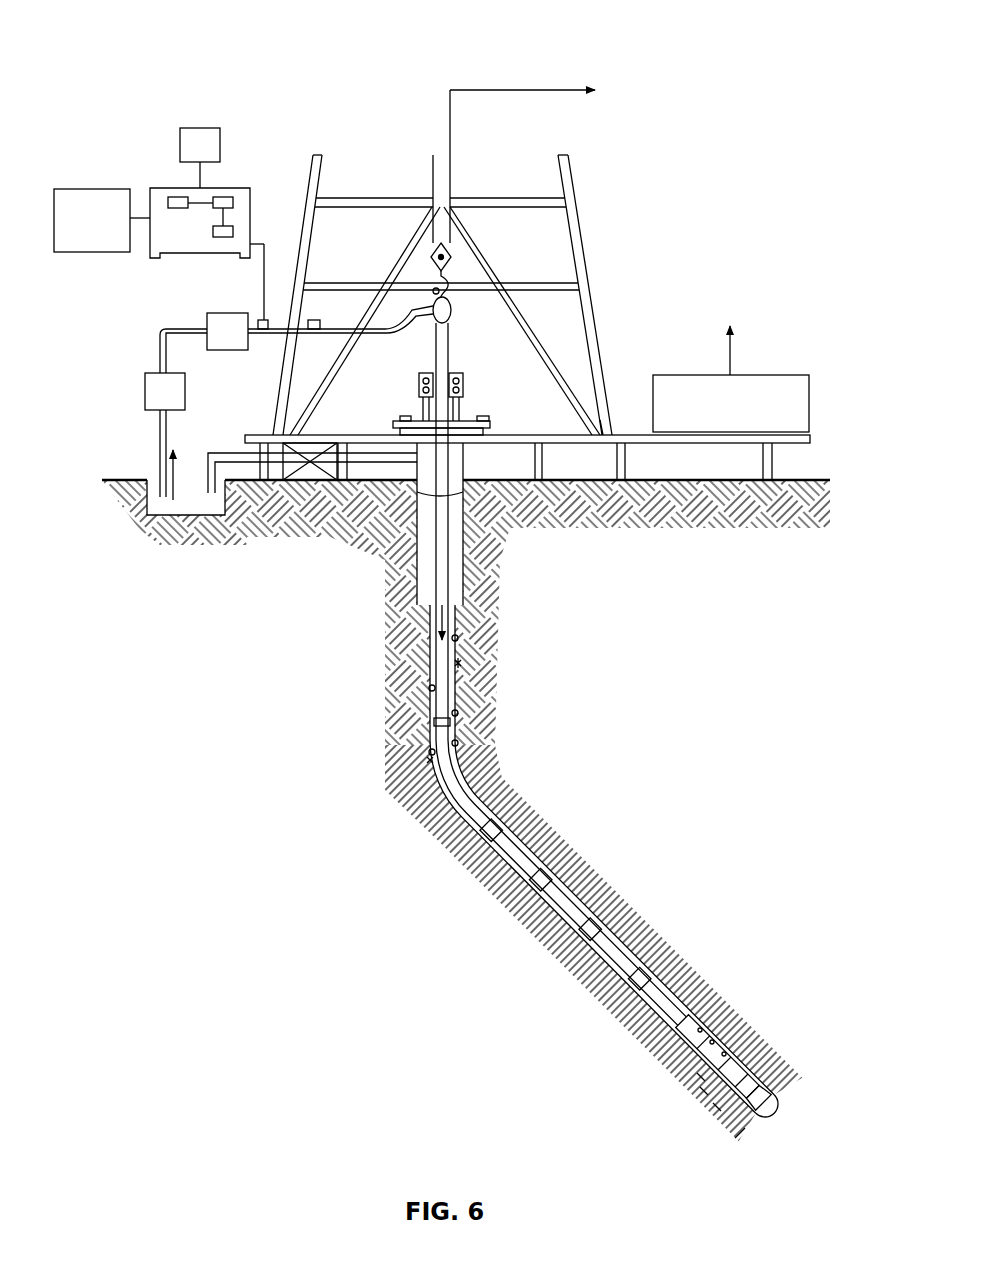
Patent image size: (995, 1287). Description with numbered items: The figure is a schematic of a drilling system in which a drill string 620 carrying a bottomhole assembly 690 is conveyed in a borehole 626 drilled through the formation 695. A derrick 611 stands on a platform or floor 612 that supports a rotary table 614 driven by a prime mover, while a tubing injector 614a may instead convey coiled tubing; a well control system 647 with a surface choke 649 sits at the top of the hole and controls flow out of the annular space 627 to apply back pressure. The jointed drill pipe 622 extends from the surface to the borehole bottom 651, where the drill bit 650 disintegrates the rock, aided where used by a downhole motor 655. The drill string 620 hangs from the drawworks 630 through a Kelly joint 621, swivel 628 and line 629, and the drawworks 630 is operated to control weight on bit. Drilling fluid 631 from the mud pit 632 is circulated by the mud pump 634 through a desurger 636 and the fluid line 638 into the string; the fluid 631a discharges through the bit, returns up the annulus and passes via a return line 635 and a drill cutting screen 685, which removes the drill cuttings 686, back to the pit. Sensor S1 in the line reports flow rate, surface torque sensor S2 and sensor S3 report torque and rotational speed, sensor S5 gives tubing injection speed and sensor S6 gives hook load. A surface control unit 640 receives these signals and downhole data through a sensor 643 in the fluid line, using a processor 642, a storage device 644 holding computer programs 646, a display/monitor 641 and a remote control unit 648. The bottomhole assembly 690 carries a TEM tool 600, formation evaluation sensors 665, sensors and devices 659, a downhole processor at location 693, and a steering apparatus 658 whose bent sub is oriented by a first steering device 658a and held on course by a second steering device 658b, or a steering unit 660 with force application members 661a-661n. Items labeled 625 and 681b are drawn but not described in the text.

The tool 600 is at (135, 54).
The derrick 611 is at (590, 297).
The platform or floor 612 is at (612, 432).
The rotary table 614 is at (465, 420).
The tubing injector 614a is at (464, 385).
The drill string 620 is at (458, 663).
The Kelly joint 621 is at (448, 360).
The jointed drill pipe 622 is at (425, 675).
The rig floor connection 625 is at (487, 433).
The borehole 626 is at (457, 745).
The annular space 627 is at (480, 800).
The swivel 628 is at (432, 318).
The line 629 is at (452, 180).
The drawworks 630 is at (750, 375).
The drilling fluid 631 is at (157, 483).
The drilling fluid from the drilling tubular 631a is at (430, 623).
The mud pit 632 is at (183, 512).
The mud pump 634 is at (145, 390).
The return line 635 is at (362, 462).
The desurger 636 is at (207, 325).
The fluid line 638 is at (278, 337).
The surface control unit 640 is at (180, 188).
The display/monitor 641 is at (198, 128).
The processor 642 is at (175, 197).
The sensor 643 is at (262, 318).
The storage device 644 is at (223, 197).
The computer programs 646 is at (223, 245).
The well control system 647 is at (400, 387).
The remote control unit 648 is at (92, 253).
The surface choke 649 is at (515, 505).
The drill bit 650 is at (788, 1072).
The borehole bottom 651 is at (735, 1138).
The downhole motor 655 is at (527, 860).
The steering apparatus 658 is at (735, 1035).
The first steering device 658a is at (713, 1103).
The second steering device 658b is at (700, 1087).
The sensors and devices 659 is at (752, 1044).
The steering unit 660 is at (697, 1075).
The force application members 661a-661n is at (727, 1017).
The formation evaluation sensors 665 is at (620, 1003).
The build section 681b is at (420, 770).
The drill cutting screen 685 is at (292, 486).
The drill cuttings 686 is at (460, 633).
The bottomhole assembly 690 is at (682, 823).
The downhole processor location 693 is at (557, 953).
The formation 695 is at (714, 873).
The sensor S1 is at (313, 320).
The surface torque sensor S2 is at (490, 418).
The sensor S3 is at (400, 421).
The sensor S5 is at (452, 312).
The sensor S6 is at (447, 292).